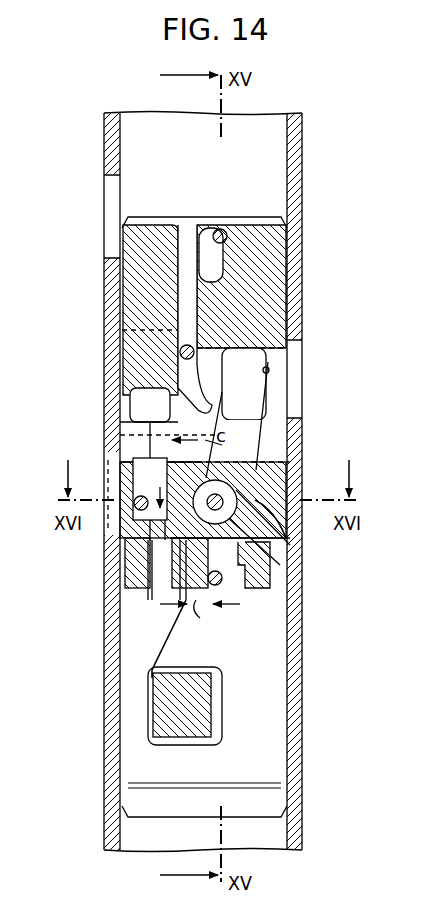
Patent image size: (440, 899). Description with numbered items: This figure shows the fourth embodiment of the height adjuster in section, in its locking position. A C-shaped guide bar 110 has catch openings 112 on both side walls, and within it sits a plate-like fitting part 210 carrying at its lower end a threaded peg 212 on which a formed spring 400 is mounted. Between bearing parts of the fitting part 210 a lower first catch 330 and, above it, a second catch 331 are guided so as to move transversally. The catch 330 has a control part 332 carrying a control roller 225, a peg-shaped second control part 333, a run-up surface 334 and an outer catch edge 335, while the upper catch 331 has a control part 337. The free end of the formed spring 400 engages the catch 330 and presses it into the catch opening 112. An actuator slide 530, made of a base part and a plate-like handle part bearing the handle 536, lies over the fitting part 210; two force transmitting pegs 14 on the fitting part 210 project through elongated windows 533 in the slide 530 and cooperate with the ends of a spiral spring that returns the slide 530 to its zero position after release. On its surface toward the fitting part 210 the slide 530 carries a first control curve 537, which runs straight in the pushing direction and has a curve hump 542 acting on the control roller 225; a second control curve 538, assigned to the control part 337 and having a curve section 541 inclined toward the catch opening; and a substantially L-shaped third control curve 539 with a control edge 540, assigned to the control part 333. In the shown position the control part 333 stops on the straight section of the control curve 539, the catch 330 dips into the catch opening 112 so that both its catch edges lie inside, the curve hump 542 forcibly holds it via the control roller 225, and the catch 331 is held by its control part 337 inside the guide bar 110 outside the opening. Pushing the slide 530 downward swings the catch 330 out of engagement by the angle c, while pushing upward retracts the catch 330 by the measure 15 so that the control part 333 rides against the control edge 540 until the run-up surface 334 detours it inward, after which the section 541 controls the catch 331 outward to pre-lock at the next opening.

The guide bar 110 is at (308, 148).
The catch openings 112 is at (118, 182).
The force transmitting pegs 14 is at (220, 229).
The fitting part 210 is at (286, 674).
The actuator slide 530 is at (132, 244).
The second catch 331 is at (295, 302).
The windows 533 is at (226, 262).
The second control curve 538 is at (186, 278).
The control part 337 is at (180, 352).
The third control curve 539 is at (134, 392).
The first control curve 537 is at (230, 382).
The curve section 541 is at (270, 372).
The handle 536 is at (160, 440).
The second control part 333 is at (130, 497).
The run-up surface 334 is at (148, 518).
The outer catch edge 335 is at (162, 534).
The control edge 540 is at (142, 565).
The control roller 225 is at (278, 448).
The curve hump 542 is at (237, 512).
The control part 332 is at (280, 560).
The first catch 330 is at (180, 600).
The measure 15 is at (207, 621).
The threaded peg 212 is at (166, 702).
The formed spring 400 is at (222, 716).